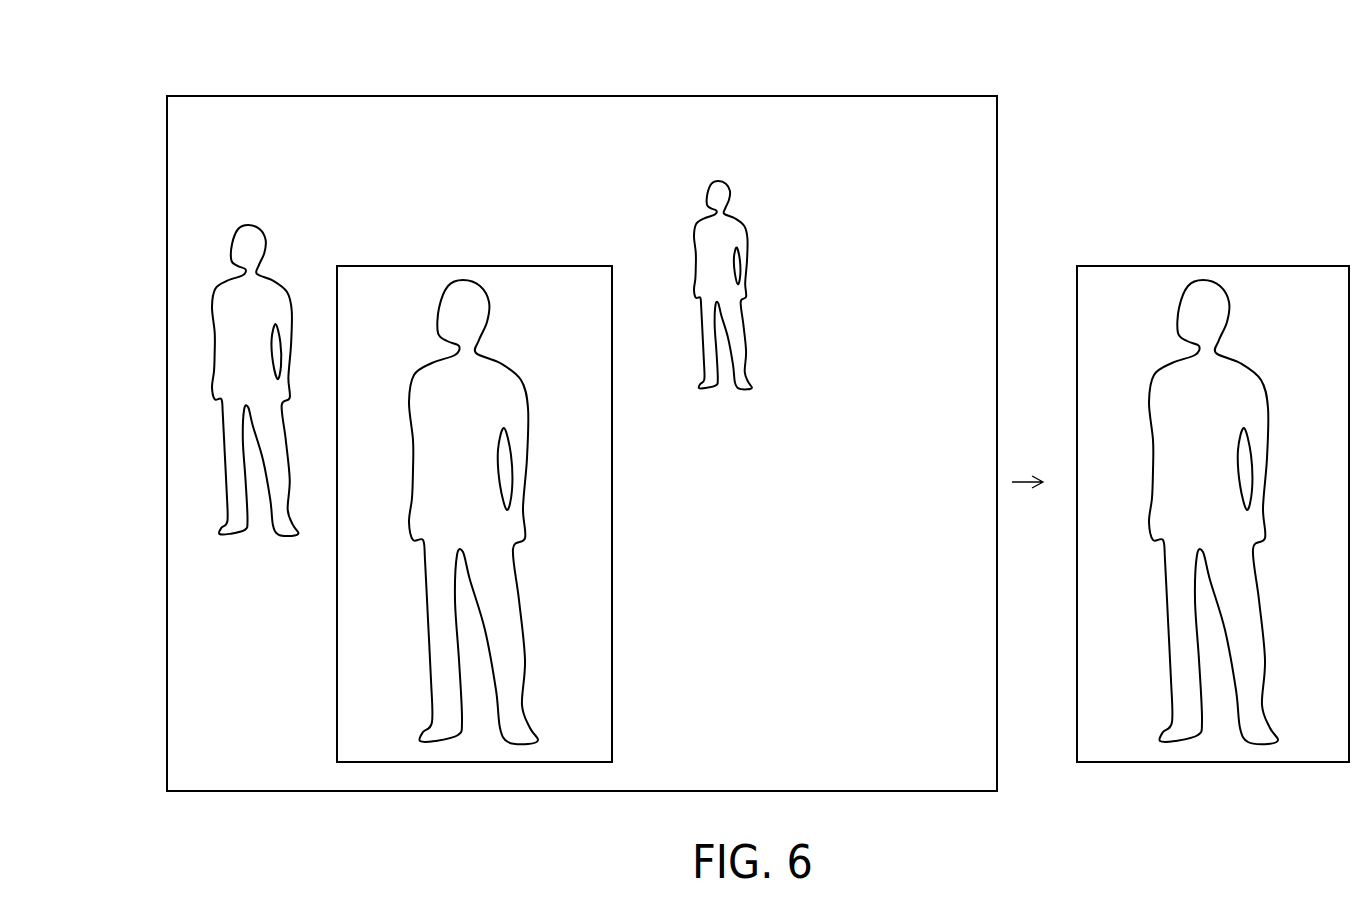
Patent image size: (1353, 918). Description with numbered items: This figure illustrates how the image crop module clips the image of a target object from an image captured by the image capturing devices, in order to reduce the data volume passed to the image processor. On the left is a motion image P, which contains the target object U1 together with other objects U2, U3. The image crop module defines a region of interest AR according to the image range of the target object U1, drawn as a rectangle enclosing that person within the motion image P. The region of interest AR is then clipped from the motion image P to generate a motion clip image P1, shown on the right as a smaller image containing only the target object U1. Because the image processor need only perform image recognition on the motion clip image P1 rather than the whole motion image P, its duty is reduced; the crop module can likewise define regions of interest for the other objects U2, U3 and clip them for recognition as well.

The motion image P is at (918, 95).
The motion clip image P1 is at (1217, 478).
The region of interest AR is at (537, 762).
The target object U1 is at (477, 478).
The other object U2 is at (267, 350).
The other object U3 is at (733, 256).